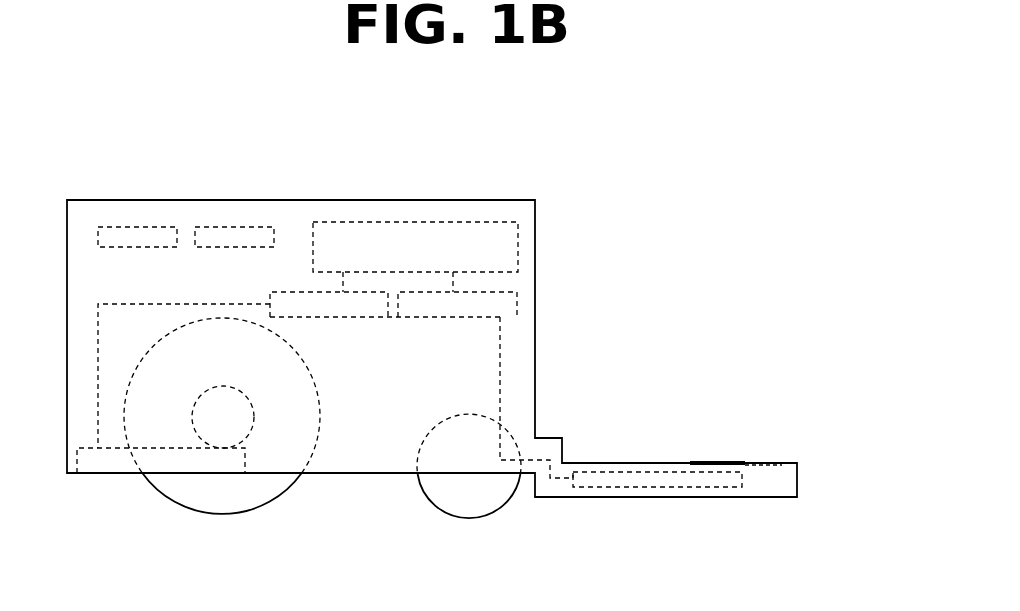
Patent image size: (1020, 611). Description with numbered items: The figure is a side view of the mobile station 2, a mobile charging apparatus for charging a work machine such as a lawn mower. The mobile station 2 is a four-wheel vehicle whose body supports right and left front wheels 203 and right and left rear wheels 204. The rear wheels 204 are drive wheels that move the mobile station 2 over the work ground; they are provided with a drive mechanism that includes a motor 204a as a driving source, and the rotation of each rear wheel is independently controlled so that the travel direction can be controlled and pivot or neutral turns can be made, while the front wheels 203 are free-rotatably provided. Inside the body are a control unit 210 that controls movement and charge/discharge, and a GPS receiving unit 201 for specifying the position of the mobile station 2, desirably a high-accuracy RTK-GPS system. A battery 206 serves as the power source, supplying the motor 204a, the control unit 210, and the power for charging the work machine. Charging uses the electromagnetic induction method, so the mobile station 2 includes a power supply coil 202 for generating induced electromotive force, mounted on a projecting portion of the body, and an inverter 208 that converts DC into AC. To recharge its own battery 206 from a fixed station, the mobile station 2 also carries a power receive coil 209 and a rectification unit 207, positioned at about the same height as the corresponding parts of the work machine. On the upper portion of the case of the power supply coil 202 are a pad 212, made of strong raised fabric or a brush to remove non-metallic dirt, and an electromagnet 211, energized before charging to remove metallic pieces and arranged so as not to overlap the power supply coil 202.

The mobile station 2 is at (699, 225).
The GPS receiving unit 201 is at (133, 226).
The control unit 210 is at (229, 226).
The battery 206 is at (413, 221).
The rectification unit 207 is at (335, 318).
The inverter 208 is at (519, 305).
The rear wheels 204 is at (235, 514).
The motor 204a is at (224, 386).
The front wheels 203 is at (462, 518).
The power receive coil 209 is at (101, 478).
The power supply coil 202 is at (682, 463).
The pad 212 is at (728, 462).
The electromagnet 211 is at (778, 462).